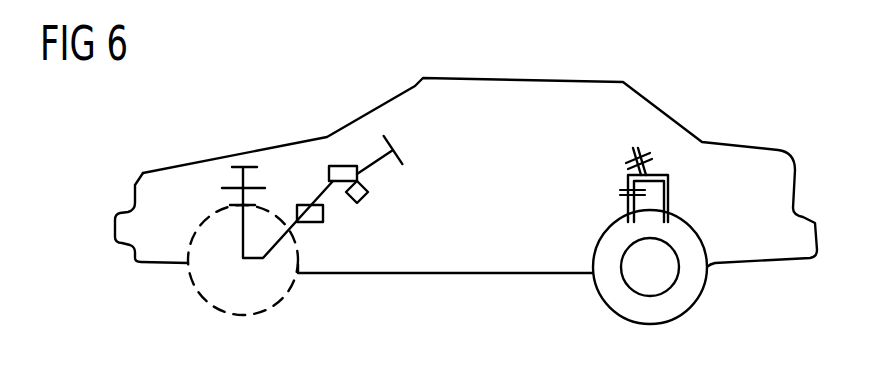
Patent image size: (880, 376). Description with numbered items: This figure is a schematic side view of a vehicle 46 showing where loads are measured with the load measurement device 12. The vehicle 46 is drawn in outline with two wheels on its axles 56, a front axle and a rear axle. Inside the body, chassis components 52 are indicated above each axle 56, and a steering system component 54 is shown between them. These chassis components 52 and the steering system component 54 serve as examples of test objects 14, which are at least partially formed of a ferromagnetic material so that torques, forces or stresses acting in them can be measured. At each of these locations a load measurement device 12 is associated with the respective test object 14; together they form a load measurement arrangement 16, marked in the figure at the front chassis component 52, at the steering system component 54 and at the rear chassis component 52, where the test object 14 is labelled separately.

The load measurement device 12 is at (332, 189).
The test object 14 is at (630, 163).
The load measurement arrangement 16 is at (214, 189).
The vehicle 46 is at (678, 91).
The chassis component 52 is at (238, 173).
The steering system component 54 is at (367, 161).
The axle 56 is at (179, 298).